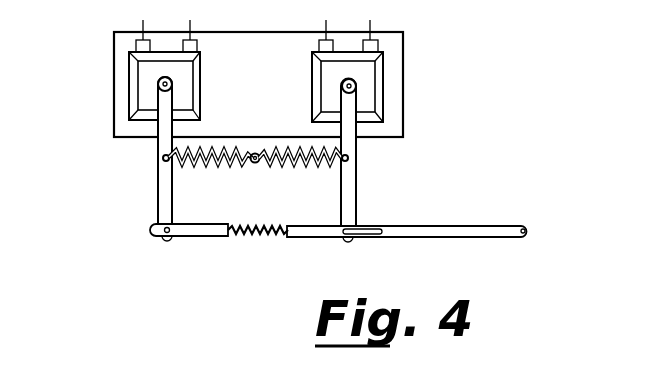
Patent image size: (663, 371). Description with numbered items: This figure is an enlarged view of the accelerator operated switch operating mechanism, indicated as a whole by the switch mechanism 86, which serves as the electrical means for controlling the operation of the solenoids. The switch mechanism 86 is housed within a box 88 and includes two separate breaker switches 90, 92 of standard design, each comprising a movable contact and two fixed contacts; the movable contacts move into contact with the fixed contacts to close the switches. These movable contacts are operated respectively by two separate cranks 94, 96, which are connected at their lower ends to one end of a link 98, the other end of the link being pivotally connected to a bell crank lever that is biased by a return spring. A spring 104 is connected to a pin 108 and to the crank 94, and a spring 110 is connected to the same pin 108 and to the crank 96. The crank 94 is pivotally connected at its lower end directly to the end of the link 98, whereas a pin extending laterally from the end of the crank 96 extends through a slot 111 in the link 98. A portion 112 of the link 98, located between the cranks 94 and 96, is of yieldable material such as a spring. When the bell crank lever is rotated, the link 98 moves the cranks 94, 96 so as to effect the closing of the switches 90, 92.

The actuator assembly 86 is at (108, 125).
The housing frame 88 is at (118, 42).
The first solenoid coil 90 is at (140, 88).
The second solenoid coil 92 is at (367, 93).
The first pivot arm 94 is at (166, 183).
The second pivot arm 96 is at (348, 190).
The lever bar 98 is at (458, 228).
The first tension spring 104 is at (195, 165).
The connecting ring 108 is at (255, 150).
The second tension spring 110 is at (283, 167).
The slot 111 is at (375, 228).
The bar spring 112 is at (247, 238).